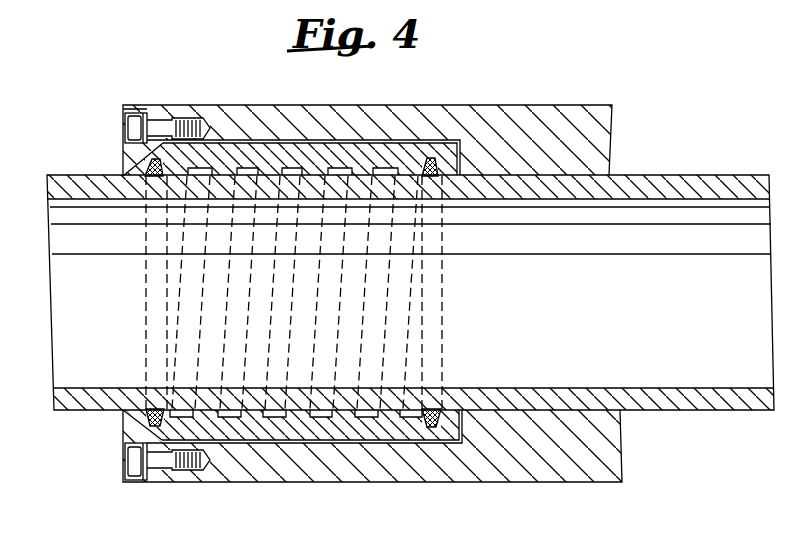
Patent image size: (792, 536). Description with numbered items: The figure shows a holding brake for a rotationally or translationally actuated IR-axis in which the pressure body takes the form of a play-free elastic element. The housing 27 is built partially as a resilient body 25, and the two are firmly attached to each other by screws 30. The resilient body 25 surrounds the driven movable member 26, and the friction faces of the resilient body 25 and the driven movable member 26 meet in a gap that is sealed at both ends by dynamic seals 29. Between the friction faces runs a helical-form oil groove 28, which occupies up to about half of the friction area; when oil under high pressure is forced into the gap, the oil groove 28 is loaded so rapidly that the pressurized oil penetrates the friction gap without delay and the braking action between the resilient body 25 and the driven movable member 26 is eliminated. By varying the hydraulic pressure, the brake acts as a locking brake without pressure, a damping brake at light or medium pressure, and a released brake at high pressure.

The resilient body 25 is at (306, 428).
The driven movable member 26 is at (662, 400).
The housing 27 is at (532, 463).
The oil groove 28 is at (228, 414).
The dynamic seals 29 is at (150, 420).
The screws 30 is at (125, 126).